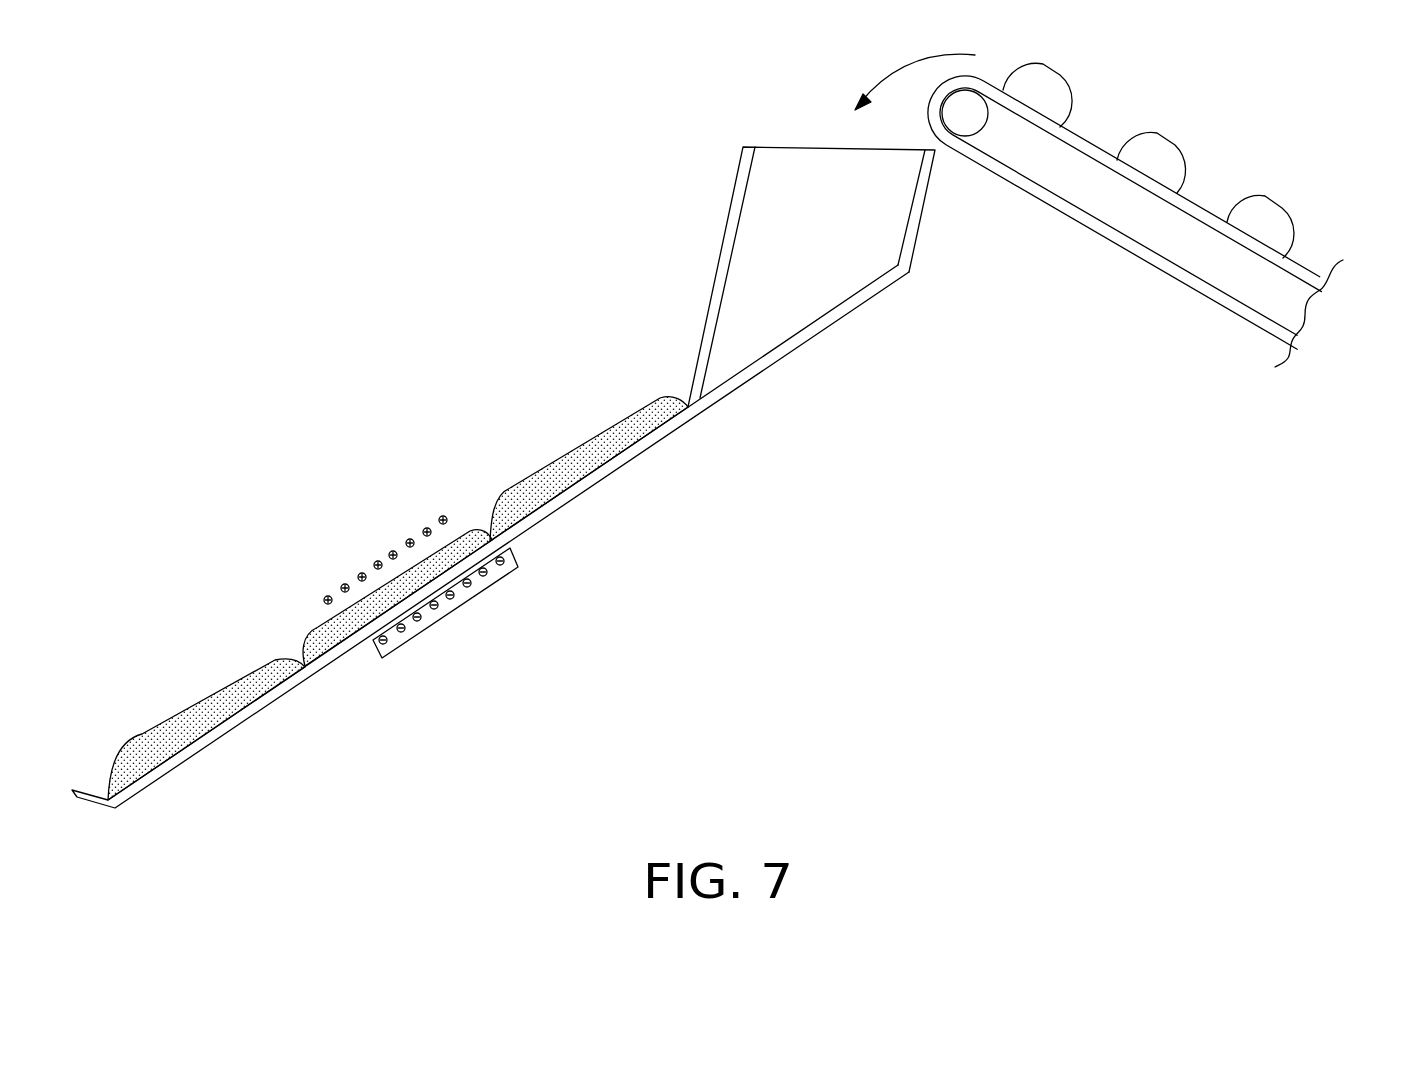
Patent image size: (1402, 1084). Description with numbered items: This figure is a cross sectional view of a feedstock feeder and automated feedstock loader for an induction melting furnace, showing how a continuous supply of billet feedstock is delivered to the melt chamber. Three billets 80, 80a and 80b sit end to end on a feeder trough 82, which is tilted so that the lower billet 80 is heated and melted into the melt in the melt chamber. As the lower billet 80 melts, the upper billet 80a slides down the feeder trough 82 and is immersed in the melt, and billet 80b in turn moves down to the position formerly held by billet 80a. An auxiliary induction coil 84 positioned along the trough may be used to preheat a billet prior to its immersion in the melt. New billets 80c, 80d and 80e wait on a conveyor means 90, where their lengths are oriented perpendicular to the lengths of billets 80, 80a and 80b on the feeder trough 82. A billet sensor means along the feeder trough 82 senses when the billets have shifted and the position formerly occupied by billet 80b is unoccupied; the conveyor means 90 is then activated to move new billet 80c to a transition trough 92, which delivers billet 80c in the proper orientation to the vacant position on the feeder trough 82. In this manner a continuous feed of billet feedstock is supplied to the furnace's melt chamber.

The billet 80 is at (203, 717).
The billet 80a is at (308, 632).
The billet 80b is at (627, 427).
The billet 80c is at (1048, 87).
The billet 80d is at (1162, 155).
The billet 80e is at (1265, 217).
The feeder trough 82 is at (242, 720).
The auxiliary induction coil 84 is at (450, 612).
The conveyor means 90 is at (1081, 215).
The transition trough 92 is at (787, 210).